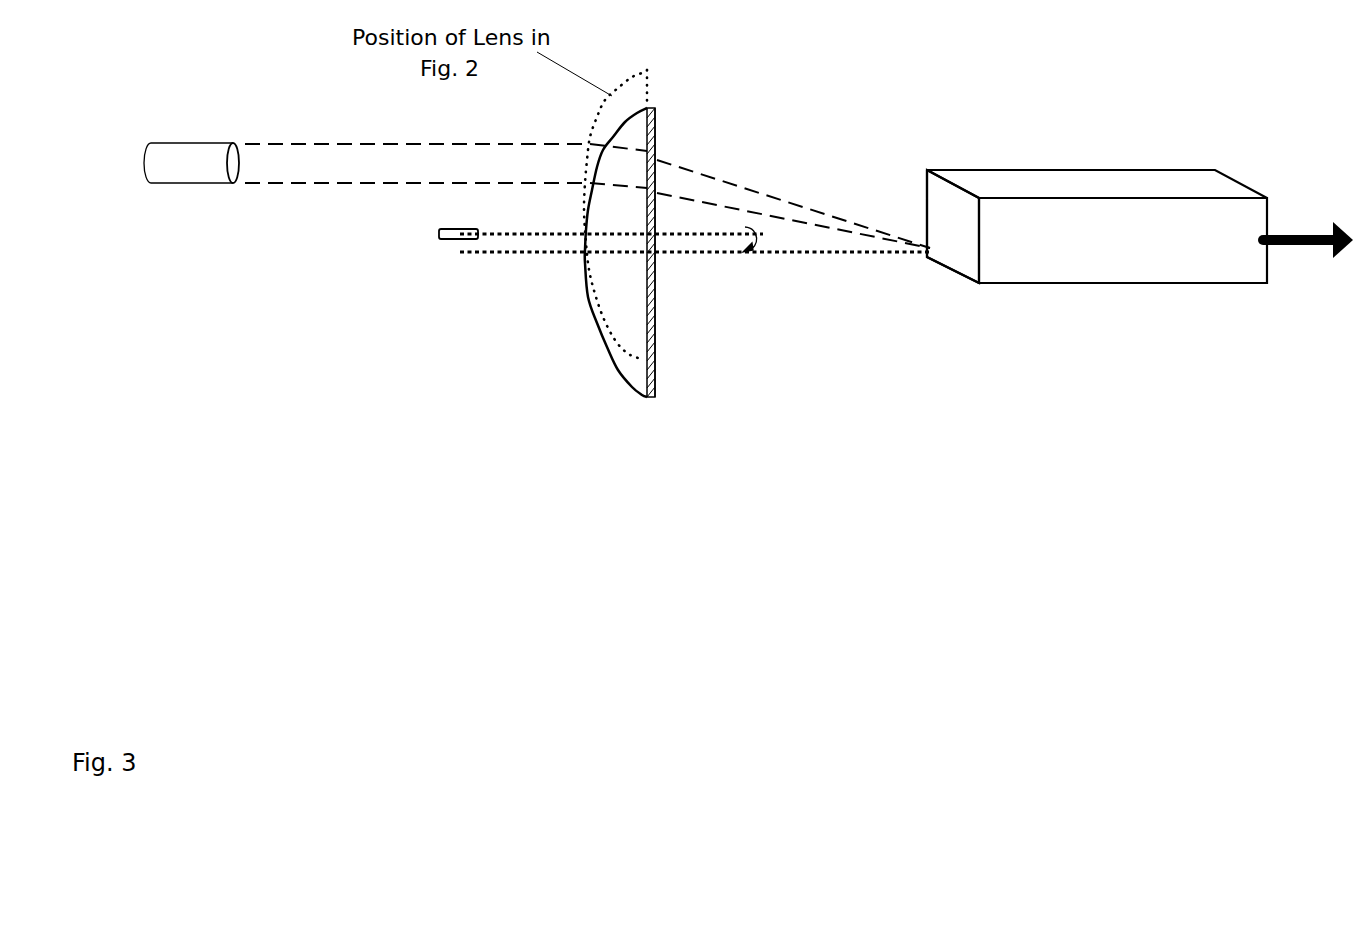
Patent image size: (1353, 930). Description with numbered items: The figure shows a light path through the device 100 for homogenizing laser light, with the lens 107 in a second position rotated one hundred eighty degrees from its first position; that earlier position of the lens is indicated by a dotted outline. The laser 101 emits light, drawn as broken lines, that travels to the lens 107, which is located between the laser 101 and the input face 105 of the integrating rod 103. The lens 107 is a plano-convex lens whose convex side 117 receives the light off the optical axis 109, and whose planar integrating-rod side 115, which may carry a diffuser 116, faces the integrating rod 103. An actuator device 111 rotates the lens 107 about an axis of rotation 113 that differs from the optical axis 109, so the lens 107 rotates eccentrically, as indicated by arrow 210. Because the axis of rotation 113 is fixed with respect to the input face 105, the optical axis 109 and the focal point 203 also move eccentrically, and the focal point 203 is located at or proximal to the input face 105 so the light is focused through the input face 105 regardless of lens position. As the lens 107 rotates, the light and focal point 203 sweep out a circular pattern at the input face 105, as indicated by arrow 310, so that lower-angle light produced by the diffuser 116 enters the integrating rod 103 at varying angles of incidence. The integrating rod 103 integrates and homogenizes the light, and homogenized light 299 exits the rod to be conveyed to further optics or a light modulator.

The device 100 is at (256, 373).
The laser 101 is at (222, 181).
The integrating rod 103 is at (1147, 277).
The input face 105 is at (971, 270).
The lens 107 is at (608, 370).
The optical axis 109 is at (550, 253).
The actuator device 111 is at (460, 238).
The axis of rotation 113 is at (545, 233).
The integrating-rod side 115 is at (665, 81).
The diffuser 116 is at (657, 389).
The convex side 117 is at (585, 347).
The focal point 203 is at (926, 232).
The arrow 210 is at (750, 253).
The homogenized light 299 is at (1338, 248).
The arrow 310 is at (948, 248).